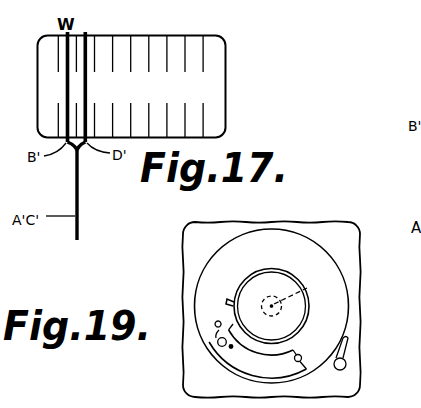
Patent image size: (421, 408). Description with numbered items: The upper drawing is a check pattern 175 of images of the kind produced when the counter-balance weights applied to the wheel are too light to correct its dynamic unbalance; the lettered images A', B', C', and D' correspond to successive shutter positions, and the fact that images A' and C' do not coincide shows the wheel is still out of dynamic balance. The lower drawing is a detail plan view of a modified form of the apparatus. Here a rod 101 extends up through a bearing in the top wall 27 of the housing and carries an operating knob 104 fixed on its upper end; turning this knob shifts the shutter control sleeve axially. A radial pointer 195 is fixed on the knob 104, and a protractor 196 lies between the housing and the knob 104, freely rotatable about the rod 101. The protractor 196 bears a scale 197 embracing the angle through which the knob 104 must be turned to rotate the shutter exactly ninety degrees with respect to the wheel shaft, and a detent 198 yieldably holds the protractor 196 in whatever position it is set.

In FIG. 17, the scale strip with graduations 175 is at (173, 43).
In FIG. 19, the top wall 27 is at (307, 227).
In FIG. 19, the protractor 196 is at (337, 300).
In FIG. 19, the operating knob 104 is at (277, 281).
In FIG. 19, the rod 101 is at (306, 292).
In FIG. 19, the radial pointer 195 is at (229, 300).
In FIG. 19, the scale 197 is at (227, 363).
In FIG. 19, the detent 198 is at (337, 350).